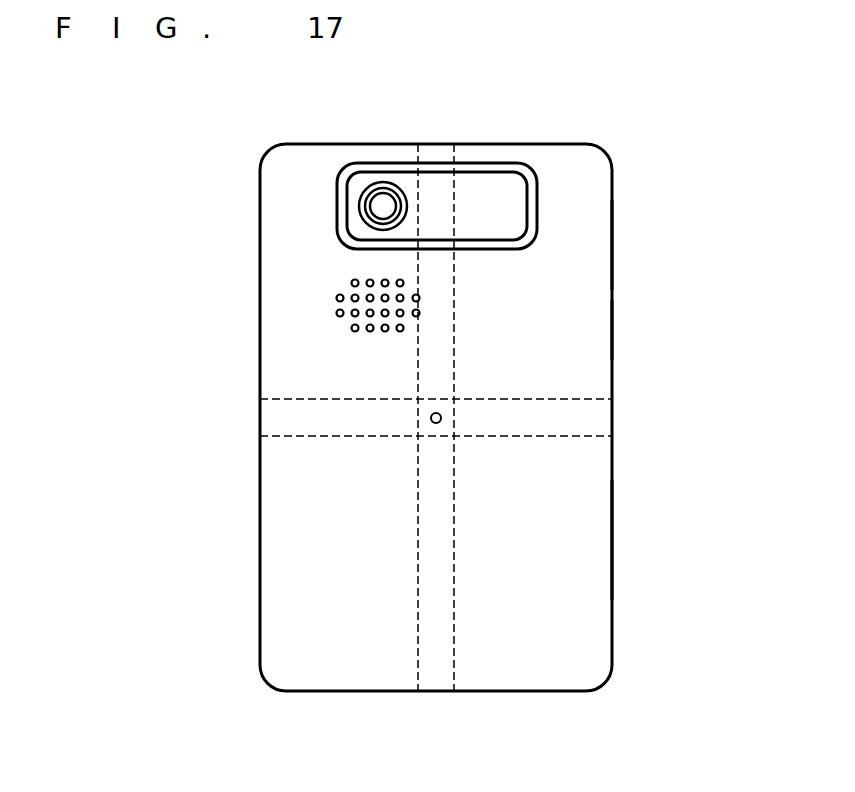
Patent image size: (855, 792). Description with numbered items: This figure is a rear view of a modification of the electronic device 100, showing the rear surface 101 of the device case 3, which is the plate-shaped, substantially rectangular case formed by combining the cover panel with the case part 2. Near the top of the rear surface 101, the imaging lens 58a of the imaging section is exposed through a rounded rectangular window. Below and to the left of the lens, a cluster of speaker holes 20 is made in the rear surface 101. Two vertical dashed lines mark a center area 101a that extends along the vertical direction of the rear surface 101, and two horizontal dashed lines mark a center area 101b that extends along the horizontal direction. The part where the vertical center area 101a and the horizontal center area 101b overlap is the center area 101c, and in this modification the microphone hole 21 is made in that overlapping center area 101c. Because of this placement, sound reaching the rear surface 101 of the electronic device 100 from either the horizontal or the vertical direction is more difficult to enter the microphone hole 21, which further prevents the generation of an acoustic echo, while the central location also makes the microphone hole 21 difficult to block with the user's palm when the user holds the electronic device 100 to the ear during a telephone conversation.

The electronic device 100 is at (512, 128).
The case part 2 is at (590, 325).
The device case 3 is at (613, 248).
The rear surface 101 is at (590, 533).
The center area extending along the vertical direction 101a is at (442, 653).
The center area extending along the horizontal direction 101b is at (565, 415).
The center area 101c is at (443, 402).
The imaging lens 58a is at (383, 205).
The speaker holes 20 is at (330, 310).
The microphone hole 21 is at (430, 419).